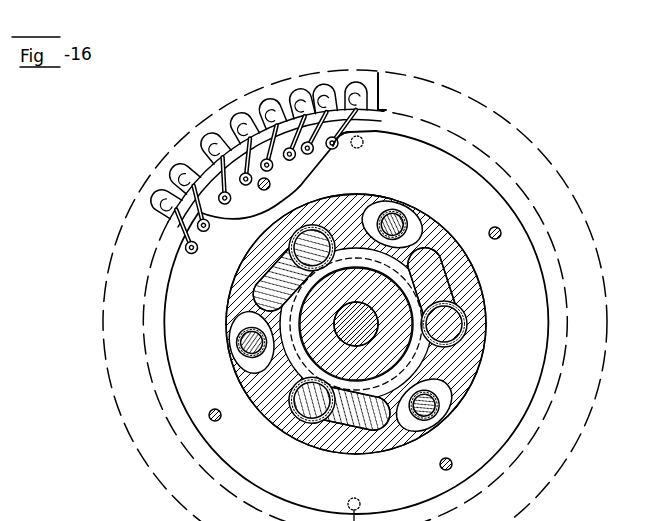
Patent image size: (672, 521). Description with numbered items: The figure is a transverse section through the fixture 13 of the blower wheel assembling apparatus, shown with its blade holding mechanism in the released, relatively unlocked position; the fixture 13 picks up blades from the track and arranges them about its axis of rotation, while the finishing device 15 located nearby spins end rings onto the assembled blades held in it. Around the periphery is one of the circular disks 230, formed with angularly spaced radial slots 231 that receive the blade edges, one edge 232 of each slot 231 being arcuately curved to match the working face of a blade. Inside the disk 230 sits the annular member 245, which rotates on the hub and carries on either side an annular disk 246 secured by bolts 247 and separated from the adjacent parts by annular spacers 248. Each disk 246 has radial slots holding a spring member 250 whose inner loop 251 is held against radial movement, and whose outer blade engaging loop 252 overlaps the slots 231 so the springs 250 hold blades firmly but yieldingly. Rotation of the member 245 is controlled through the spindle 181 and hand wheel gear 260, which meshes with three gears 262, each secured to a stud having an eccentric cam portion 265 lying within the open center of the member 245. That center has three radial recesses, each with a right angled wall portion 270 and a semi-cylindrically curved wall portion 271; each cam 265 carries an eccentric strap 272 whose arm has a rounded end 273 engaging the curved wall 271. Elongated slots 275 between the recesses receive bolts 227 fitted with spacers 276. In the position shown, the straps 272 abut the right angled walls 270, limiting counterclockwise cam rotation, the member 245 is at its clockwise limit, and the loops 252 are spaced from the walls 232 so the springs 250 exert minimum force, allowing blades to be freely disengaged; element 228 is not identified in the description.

The fixture 13 is at (301, 309).
The finishing device 15 is at (220, 146).
The spindle 181 is at (368, 385).
The bolts 227 is at (420, 213).
The stator body outer wall 228 is at (478, 355).
The circular disks 230 is at (426, 80).
The slot 231 is at (382, 73).
The edge of slot 232 is at (245, 108).
The annular member 245 is at (381, 176).
The annular disks 246 is at (185, 231).
The bolts 247 is at (497, 240).
The annular spacers 248 is at (165, 327).
The spring member 250 is at (160, 178).
The loop 251 is at (341, 146).
The blade engaging loop 252 is at (207, 132).
The gear 260 is at (285, 310).
The gears 262 is at (470, 327).
The eccentric cam portion 265 is at (308, 200).
The right angled wall portion 270 is at (262, 406).
The semi-cylindrically curved wall portion 271 is at (432, 212).
The eccentric strap 272 is at (458, 290).
The rounded end 273 is at (489, 235).
The elongated slots 275 is at (400, 210).
The spacers 276 is at (457, 393).